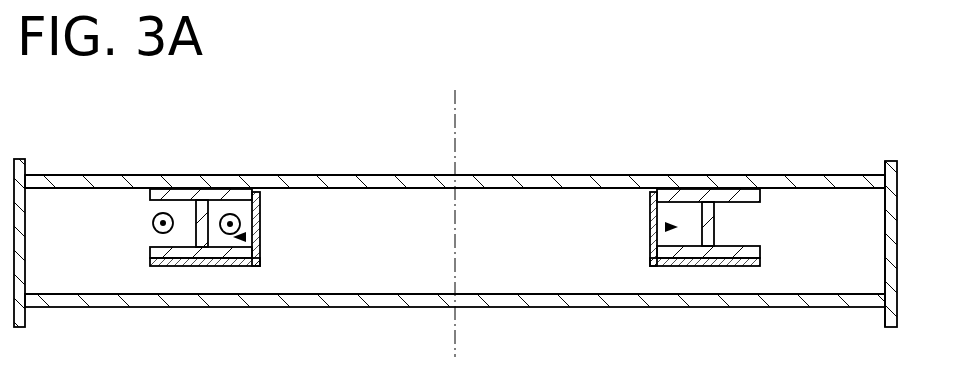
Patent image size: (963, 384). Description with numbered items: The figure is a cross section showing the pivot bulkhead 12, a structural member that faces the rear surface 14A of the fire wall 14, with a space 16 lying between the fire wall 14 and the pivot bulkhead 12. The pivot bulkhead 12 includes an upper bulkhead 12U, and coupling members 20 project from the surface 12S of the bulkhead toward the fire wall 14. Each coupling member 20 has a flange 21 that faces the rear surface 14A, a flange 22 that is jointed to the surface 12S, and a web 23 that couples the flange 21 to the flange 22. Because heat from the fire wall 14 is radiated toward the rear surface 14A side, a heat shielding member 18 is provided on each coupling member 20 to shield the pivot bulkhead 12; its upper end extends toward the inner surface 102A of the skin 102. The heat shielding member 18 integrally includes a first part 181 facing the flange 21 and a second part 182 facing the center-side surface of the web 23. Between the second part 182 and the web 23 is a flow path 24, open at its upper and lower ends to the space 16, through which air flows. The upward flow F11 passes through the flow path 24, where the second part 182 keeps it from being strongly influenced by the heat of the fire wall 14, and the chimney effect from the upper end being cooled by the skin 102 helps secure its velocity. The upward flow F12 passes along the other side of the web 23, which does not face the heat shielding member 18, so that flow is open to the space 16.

The pivot bulkhead 12 is at (815, 164).
The upper bulkhead 12U is at (587, 175).
The surface of the upper bulkhead 12S is at (390, 188).
The fire wall 14 is at (387, 308).
The rear surface of the fire wall 14A is at (573, 294).
The space 16 is at (415, 284).
The heat shielding member 18 is at (445, 242).
The first part 181 is at (162, 266).
The second part 182 is at (260, 218).
The coupling member 20 is at (409, 191).
The flange 21 is at (150, 252).
The flange 22 is at (150, 192).
The web 23 is at (152, 207).
The flow path 24 is at (246, 237).
The skin 102 is at (897, 215).
The inner surface of the skin 102A is at (885, 265).
The upward flow F11 is at (230, 214).
The upward flow F12 is at (137, 231).